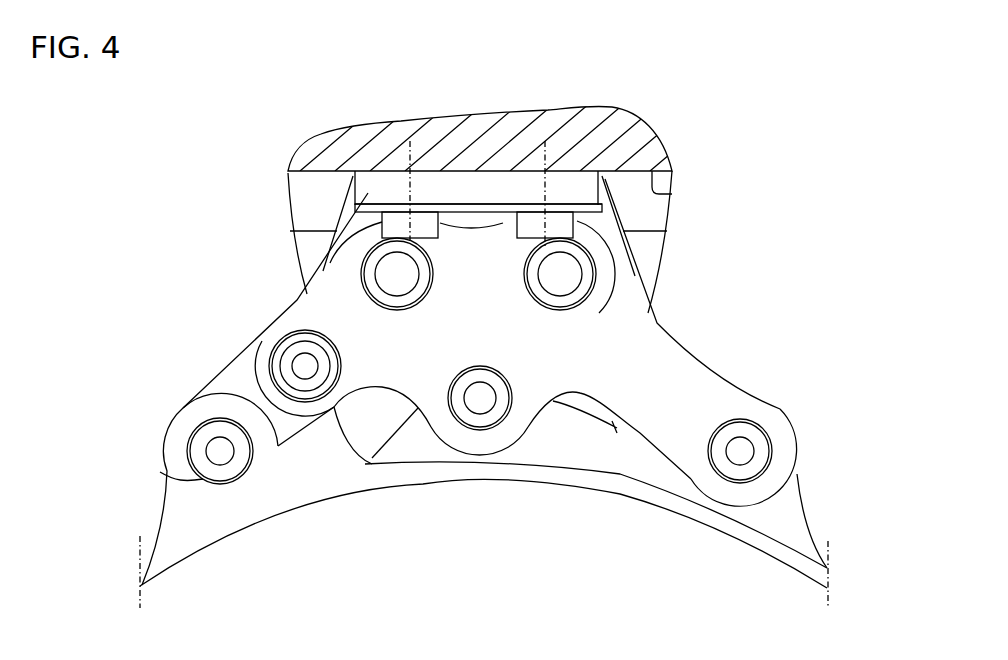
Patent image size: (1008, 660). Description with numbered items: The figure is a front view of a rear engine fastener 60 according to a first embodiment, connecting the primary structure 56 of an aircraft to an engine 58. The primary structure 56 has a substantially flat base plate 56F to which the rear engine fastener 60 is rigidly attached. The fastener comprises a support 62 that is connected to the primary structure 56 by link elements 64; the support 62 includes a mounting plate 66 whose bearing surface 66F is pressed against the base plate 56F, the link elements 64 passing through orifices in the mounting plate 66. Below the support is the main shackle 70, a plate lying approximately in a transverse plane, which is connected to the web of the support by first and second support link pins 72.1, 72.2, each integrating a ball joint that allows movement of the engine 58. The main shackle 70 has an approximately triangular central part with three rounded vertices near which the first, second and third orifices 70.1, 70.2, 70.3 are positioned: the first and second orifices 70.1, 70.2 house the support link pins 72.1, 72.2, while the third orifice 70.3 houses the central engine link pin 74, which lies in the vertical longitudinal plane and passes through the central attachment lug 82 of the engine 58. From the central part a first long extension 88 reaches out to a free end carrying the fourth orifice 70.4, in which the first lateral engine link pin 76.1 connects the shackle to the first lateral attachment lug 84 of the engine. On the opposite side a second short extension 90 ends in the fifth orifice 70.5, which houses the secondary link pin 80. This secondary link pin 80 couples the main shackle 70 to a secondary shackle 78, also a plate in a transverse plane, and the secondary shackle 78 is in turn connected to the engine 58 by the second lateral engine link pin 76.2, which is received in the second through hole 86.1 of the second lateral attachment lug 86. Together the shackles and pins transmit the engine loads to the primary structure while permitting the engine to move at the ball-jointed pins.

The primary structure 56 is at (632, 127).
The base plate 56F is at (672, 186).
The engine 58 is at (815, 543).
The rear engine fastener 60 is at (745, 272).
The support 62 is at (340, 224).
The link elements 64 is at (423, 215).
The mounting plate 66 is at (355, 199).
The bearing surface 66F is at (372, 168).
The main shackle 70 is at (473, 382).
The first orifice 70.1 is at (363, 303).
The second orifice 70.2 is at (563, 310).
The third orifice 70.3 is at (508, 425).
The fourth orifice 70.4 is at (775, 450).
The fifth orifice 70.5 is at (273, 438).
The first support link pin 72.1 is at (383, 268).
The second support link pin 72.2 is at (590, 262).
The central engine link pin 74 is at (478, 430).
The first lateral engine link pin 76.1 is at (762, 430).
The second lateral engine link pin 76.2 is at (226, 472).
The secondary shackle 78 is at (222, 375).
The secondary link pin 80 is at (283, 345).
The central attachment lug 82 is at (416, 447).
The first lateral attachment lug 84 is at (785, 507).
The second lateral attachment lug 86 is at (168, 440).
The second through hole 86.1 is at (160, 471).
The first long extension 88 is at (732, 383).
The second short extension 90 is at (345, 402).